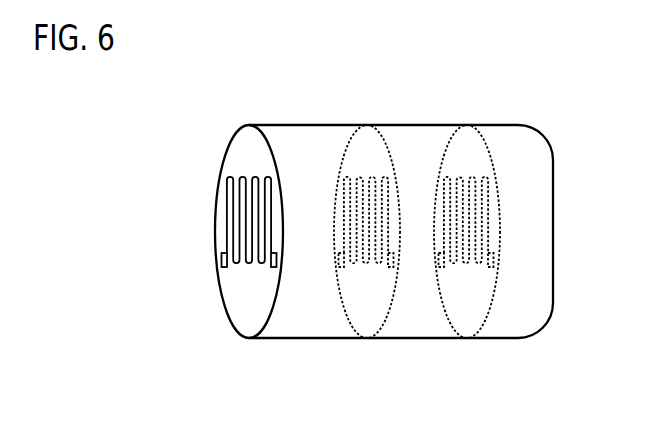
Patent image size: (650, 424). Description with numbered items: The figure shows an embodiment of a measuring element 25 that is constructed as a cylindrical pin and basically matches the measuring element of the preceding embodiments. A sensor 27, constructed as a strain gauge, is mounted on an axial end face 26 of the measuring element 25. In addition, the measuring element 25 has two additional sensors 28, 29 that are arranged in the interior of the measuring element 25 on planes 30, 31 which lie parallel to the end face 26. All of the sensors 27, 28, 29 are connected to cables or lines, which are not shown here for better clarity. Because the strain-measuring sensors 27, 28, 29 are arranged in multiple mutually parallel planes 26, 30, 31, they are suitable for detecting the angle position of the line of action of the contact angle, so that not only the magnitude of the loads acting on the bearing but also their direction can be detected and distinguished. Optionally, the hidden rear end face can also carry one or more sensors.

The measuring element 25 is at (177, 150).
The axial end face 26 is at (248, 143).
The sensor 27 is at (227, 239).
The additional sensor 28 is at (370, 267).
The additional sensor 29 is at (470, 267).
The plane 30 is at (364, 143).
The plane 31 is at (467, 145).